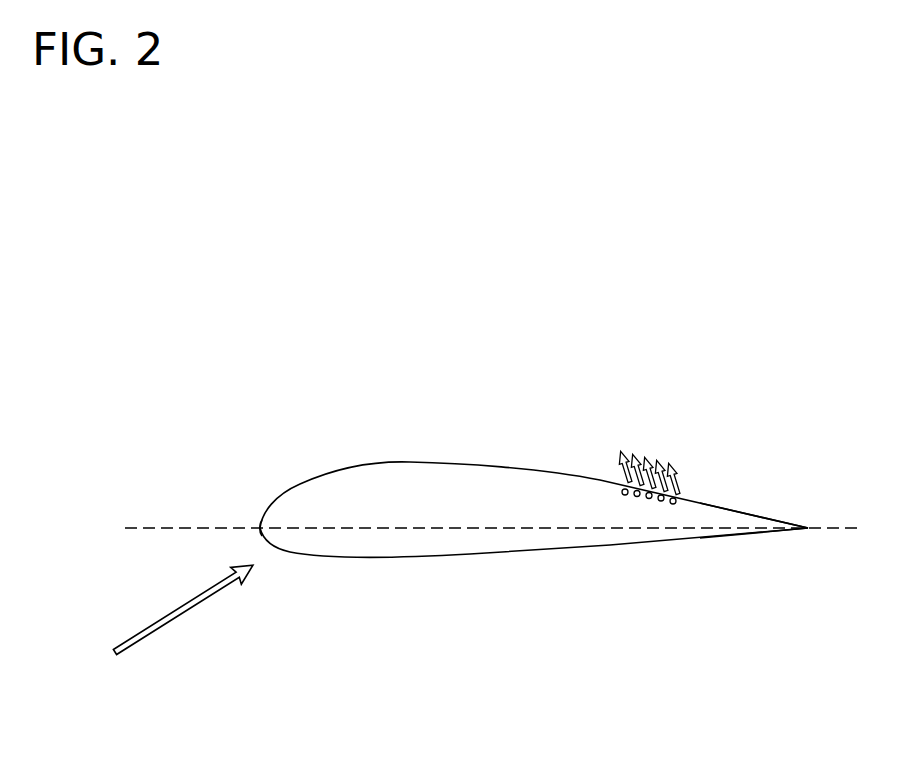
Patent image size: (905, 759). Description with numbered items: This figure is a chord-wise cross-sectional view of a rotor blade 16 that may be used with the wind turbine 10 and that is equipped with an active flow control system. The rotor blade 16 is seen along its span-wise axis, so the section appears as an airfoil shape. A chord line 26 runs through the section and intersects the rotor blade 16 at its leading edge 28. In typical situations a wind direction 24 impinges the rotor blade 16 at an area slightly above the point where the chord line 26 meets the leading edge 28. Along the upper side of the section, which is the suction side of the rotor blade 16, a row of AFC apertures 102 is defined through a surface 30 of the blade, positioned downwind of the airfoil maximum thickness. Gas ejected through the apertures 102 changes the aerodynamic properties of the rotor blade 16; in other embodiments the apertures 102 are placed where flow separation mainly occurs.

The wind turbine 10 is at (733, 217).
The rotor blade 16 is at (532, 420).
The wind direction 24 is at (238, 583).
The chord line 26 is at (145, 528).
The leading edge 28 is at (258, 526).
The surface 30 is at (737, 520).
The AFC apertures 102 is at (650, 500).